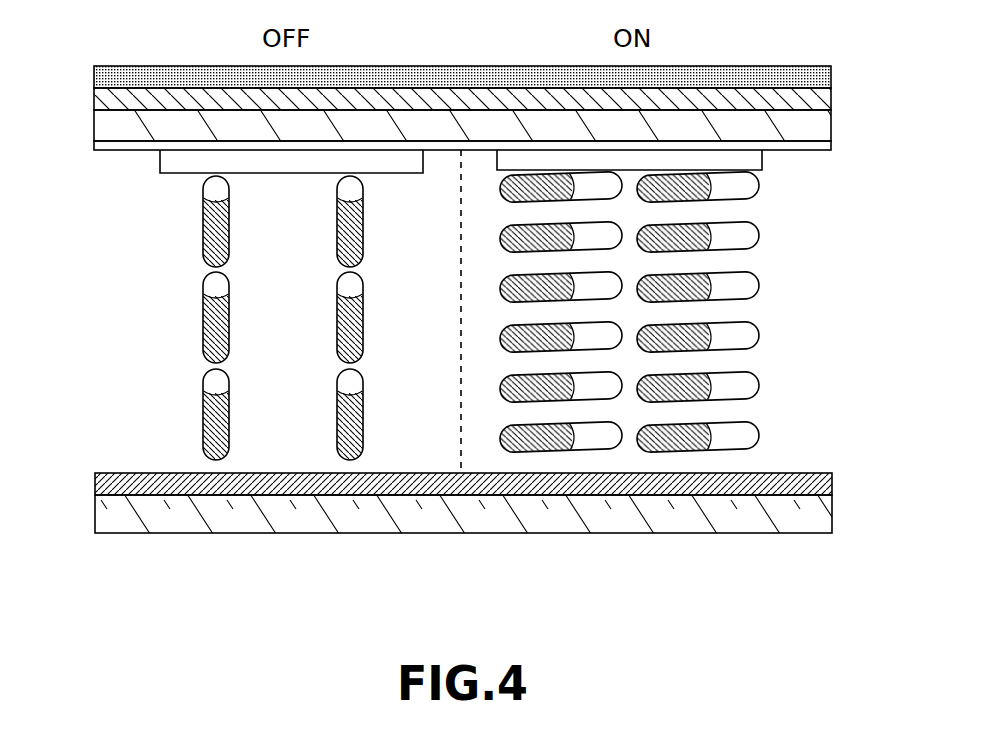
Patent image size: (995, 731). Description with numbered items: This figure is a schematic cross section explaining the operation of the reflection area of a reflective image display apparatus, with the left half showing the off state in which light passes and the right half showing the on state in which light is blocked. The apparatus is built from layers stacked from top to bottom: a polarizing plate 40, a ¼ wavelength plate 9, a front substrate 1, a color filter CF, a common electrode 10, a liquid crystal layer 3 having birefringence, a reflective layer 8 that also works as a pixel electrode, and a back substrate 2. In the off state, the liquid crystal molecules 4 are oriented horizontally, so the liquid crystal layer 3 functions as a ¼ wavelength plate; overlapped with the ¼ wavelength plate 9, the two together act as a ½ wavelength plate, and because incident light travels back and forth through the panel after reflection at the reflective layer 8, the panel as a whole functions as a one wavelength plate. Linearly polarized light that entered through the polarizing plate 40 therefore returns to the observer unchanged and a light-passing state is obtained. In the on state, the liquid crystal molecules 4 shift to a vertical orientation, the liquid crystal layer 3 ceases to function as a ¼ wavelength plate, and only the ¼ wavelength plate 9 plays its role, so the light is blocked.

The polarizing plate 40 is at (807, 74).
The ¼ wavelength plate 9 is at (808, 95).
The front substrate 1 is at (805, 129).
The color filter CF is at (94, 146).
The common electrode 10 is at (160, 163).
The liquid crystal layer 3 is at (503, 310).
The liquid crystal molecules 4 is at (216, 283).
The reflective layer 8 is at (817, 478).
The back substrate 2 is at (812, 520).